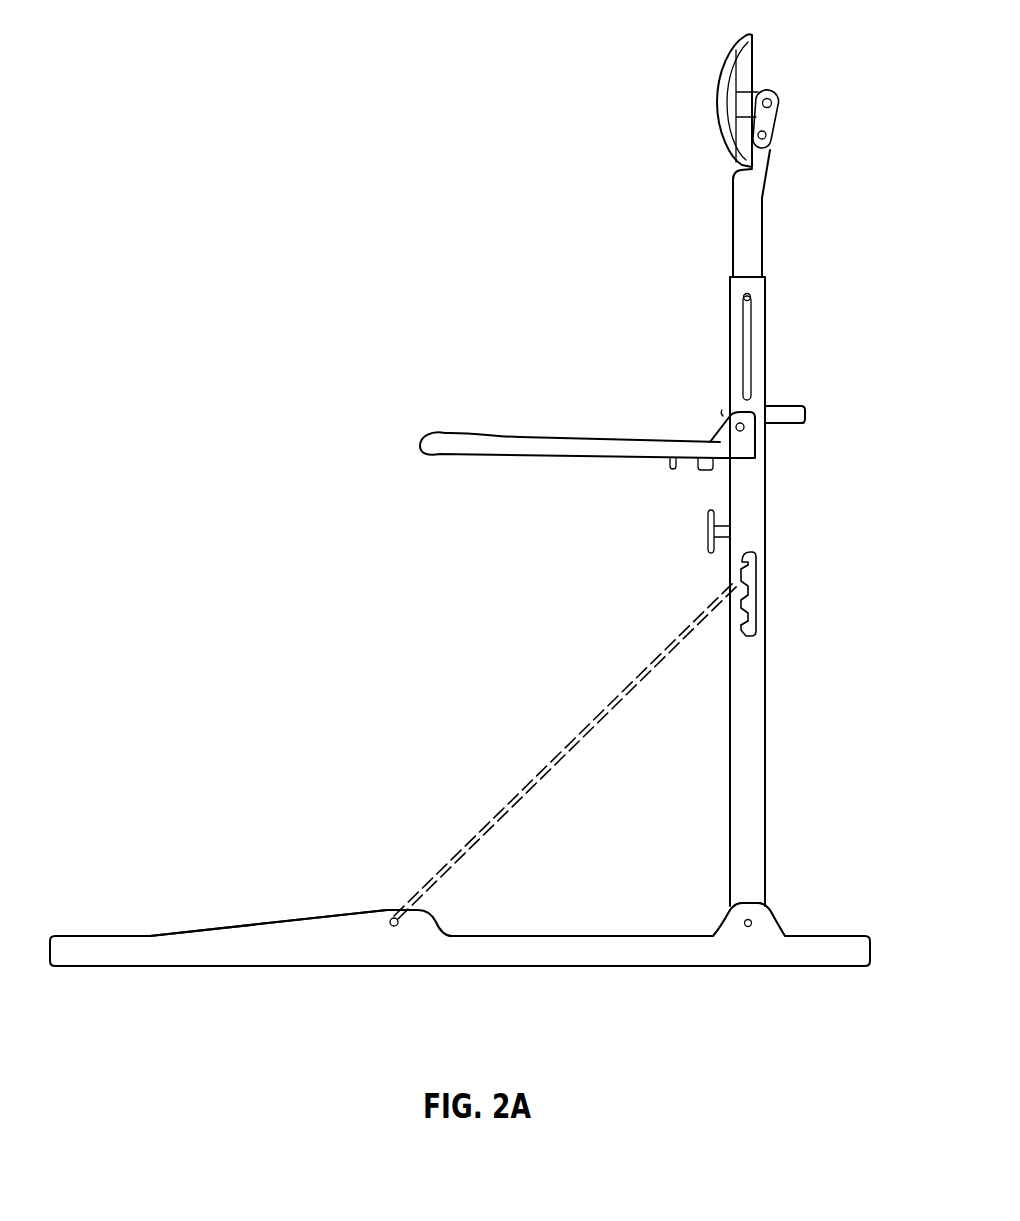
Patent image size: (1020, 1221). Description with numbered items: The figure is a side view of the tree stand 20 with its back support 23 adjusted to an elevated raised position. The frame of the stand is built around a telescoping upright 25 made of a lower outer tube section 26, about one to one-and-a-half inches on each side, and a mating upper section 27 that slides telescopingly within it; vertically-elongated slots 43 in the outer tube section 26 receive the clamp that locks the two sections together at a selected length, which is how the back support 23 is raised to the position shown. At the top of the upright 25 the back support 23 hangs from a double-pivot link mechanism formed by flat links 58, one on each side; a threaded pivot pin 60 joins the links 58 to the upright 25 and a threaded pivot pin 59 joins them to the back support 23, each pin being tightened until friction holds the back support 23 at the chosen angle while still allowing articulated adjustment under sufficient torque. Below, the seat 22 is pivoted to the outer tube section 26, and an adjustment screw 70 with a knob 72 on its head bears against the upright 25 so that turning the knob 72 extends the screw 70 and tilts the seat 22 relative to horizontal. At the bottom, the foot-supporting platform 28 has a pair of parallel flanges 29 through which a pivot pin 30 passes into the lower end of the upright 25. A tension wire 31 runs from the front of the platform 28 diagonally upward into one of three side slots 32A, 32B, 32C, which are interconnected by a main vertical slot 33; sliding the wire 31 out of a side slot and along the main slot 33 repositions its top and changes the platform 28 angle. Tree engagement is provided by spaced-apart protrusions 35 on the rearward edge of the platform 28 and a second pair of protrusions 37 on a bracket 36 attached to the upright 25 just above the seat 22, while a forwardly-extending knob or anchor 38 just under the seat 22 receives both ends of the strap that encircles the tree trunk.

The tree stand 20 is at (490, 342).
The seat 22 is at (429, 440).
The back support 23 is at (720, 68).
The telescoping upright 25 is at (778, 783).
The outer tube section 26 is at (757, 700).
The upper section 27 is at (762, 236).
The foot-supporting platform 28 is at (227, 910).
The flanges 29 is at (733, 922).
The pivot pin 30 is at (752, 920).
The tension cable or wire 31 is at (536, 772).
The side slot 32A is at (737, 578).
The side slot 32B is at (740, 604).
The side slot 32C is at (742, 633).
The main vertical slot 33 is at (752, 590).
The protrusions 35 is at (828, 955).
The bracket 36 is at (788, 406).
The protrusions 37 is at (800, 423).
The knob or anchor 38 is at (707, 522).
The vertically-elongated slots 43 is at (751, 322).
The flat links 58 is at (780, 116).
The threaded pivot pin 59 is at (767, 142).
The threaded pivot pin 60 is at (773, 100).
The adjustment screw 70 is at (676, 494).
The knob 72 is at (697, 470).